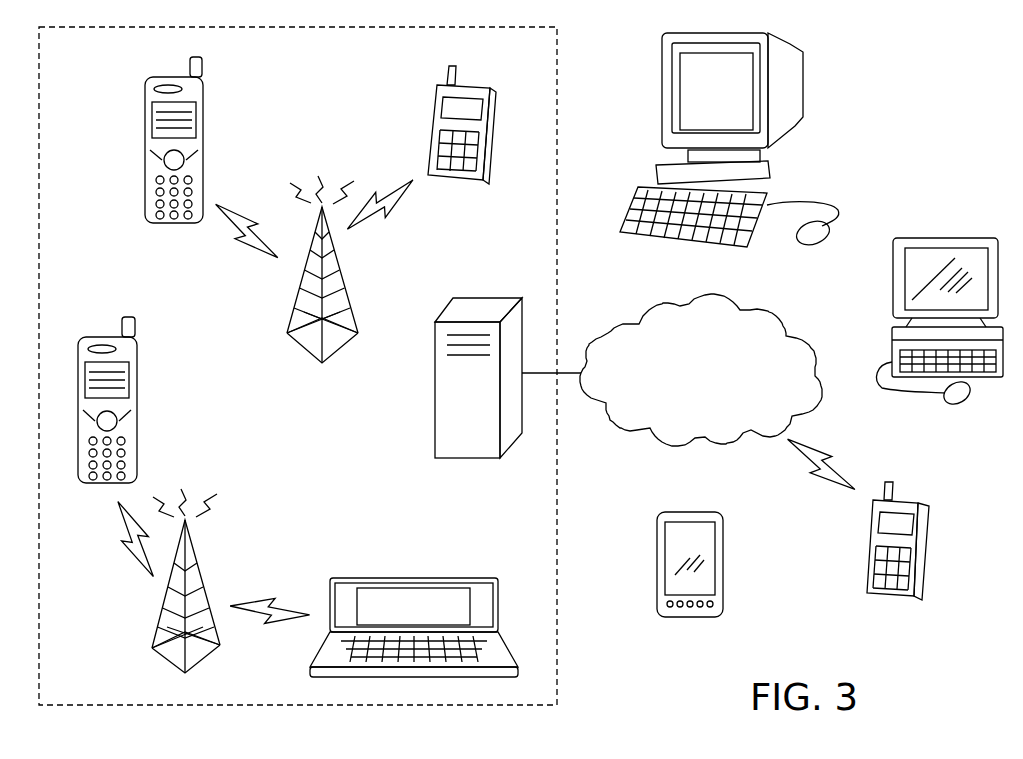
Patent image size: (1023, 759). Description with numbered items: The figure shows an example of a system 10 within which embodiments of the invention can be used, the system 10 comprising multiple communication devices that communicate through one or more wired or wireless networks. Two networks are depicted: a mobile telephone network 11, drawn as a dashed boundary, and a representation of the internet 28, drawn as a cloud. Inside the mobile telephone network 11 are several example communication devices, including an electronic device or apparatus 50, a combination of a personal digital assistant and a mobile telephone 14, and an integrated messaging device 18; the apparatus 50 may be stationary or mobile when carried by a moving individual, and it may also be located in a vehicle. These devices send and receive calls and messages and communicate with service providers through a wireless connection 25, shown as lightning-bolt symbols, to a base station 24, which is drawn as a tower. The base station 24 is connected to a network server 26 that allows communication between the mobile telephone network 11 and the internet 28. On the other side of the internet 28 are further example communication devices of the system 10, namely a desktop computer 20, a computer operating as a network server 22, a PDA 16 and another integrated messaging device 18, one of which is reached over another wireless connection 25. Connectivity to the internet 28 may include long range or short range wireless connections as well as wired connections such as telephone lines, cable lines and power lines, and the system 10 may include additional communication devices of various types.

The system 10 is at (986, 467).
The mobile telephone network 11 is at (84, 63).
The combination of a personal digital assistant and a mobile telephone 14 is at (400, 578).
The PDA 16 is at (723, 560).
The integrated messaging device 18 is at (437, 132).
The desktop computer 20 is at (803, 88).
The computer operating as a network server 22 is at (945, 238).
The base station 24 is at (340, 268).
The wireless connection 25 is at (120, 570).
The network server 26 is at (435, 385).
The internet 28 is at (626, 326).
The electronic device or apparatus 50 is at (203, 148).